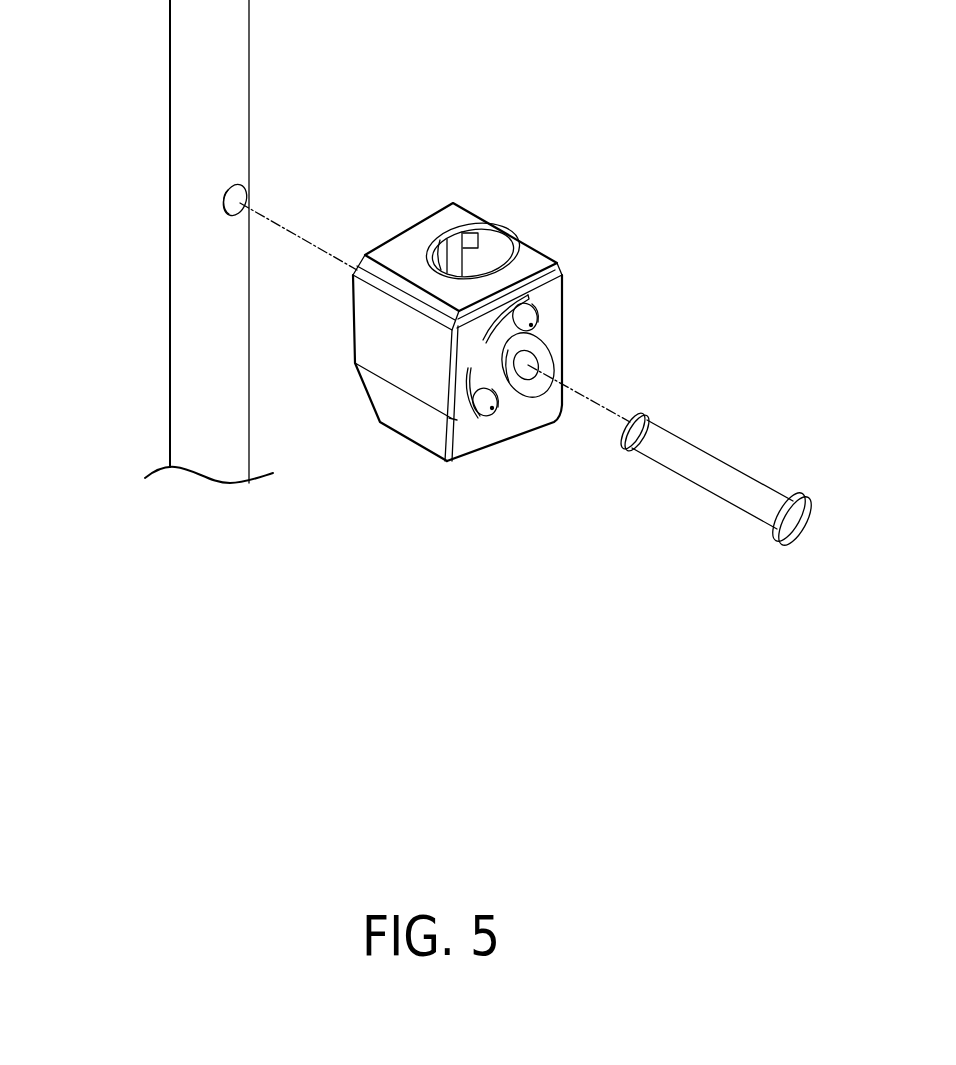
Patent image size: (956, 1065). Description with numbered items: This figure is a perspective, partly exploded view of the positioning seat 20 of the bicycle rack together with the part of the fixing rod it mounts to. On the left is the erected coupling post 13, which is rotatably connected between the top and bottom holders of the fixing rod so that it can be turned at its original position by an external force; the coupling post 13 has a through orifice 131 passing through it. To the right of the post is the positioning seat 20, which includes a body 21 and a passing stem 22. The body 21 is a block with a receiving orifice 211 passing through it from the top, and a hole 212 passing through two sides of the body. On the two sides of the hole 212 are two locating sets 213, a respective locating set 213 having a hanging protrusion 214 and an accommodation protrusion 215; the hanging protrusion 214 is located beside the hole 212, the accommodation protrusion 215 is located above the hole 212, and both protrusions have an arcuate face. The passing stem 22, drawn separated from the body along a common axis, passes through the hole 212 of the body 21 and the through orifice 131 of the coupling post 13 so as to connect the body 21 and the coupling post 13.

The coupling post 13 is at (200, 57).
The through orifice 131 is at (225, 207).
The positioning seat 20 is at (495, 386).
The body 21 is at (403, 420).
The receiving orifice 211 is at (447, 227).
The hole 212 is at (528, 365).
The locating set 213 is at (610, 569).
The hanging protrusion 214 is at (485, 412).
The accommodation protrusion 215 is at (528, 317).
The passing stem 22 is at (692, 465).